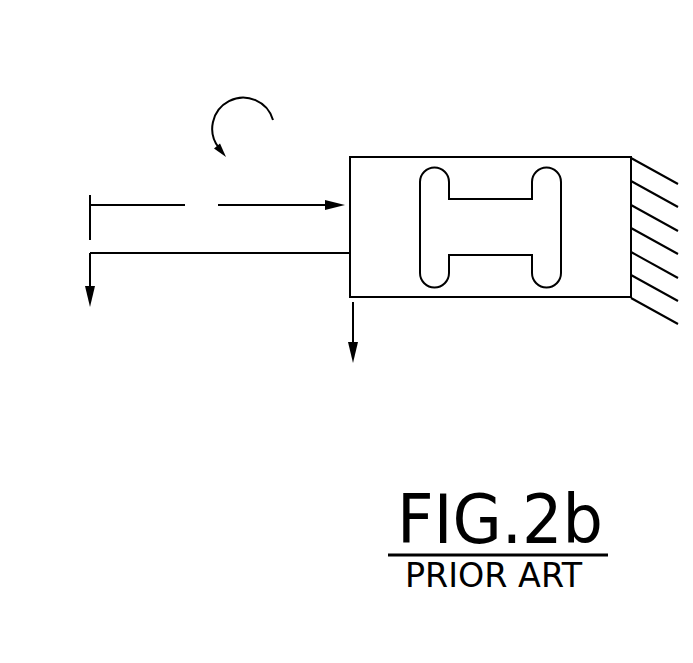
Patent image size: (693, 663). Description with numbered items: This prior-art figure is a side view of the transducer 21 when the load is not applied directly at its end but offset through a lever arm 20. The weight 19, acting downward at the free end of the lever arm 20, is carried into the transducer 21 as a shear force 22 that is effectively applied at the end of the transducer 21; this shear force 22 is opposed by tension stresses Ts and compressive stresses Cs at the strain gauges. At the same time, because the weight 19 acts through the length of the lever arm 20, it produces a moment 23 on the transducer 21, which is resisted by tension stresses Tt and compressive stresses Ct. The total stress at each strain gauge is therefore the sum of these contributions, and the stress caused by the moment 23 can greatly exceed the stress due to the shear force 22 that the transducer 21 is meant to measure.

The weight 19 is at (105, 328).
The lever arm 20 is at (212, 208).
The transducer 21 is at (593, 157).
The shear force 22 is at (345, 365).
The moment 23 is at (213, 112).